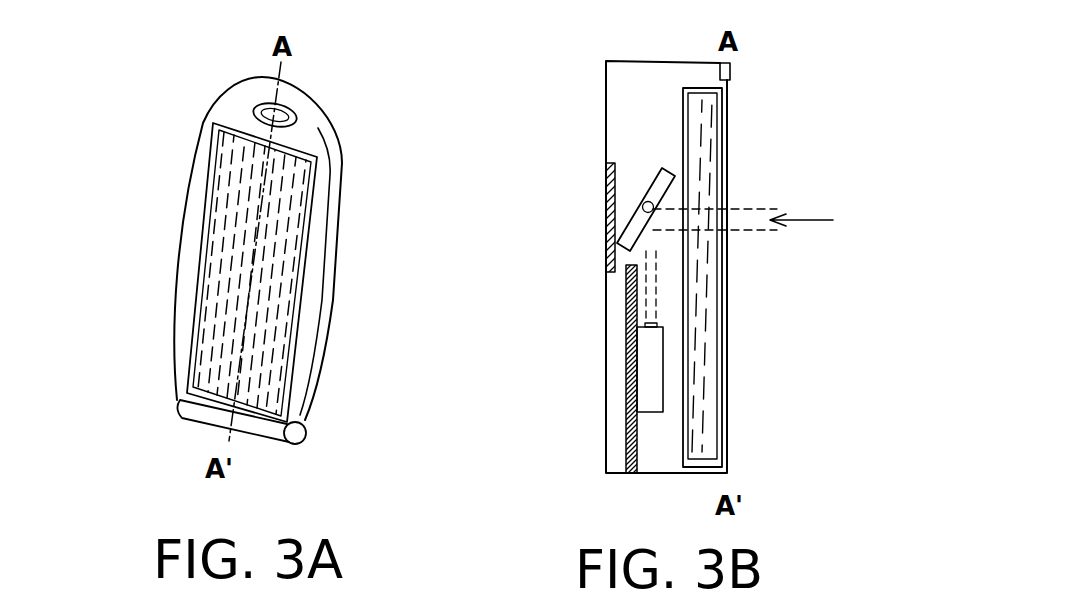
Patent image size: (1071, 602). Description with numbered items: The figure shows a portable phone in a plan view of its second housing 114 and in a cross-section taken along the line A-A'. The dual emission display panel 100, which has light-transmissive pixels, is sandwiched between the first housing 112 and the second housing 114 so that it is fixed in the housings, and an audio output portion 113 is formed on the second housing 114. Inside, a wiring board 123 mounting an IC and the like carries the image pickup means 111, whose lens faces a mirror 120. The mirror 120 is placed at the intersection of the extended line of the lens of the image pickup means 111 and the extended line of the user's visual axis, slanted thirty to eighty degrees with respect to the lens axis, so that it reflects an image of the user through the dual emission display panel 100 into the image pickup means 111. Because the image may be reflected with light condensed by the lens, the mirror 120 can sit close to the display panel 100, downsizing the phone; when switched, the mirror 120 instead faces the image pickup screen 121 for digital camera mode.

In FIG. 3A, the dual emission display panel 100 is at (285, 350).
In FIG. 3B, the dual emission display panel 100 is at (705, 337).
In FIG. 3B, the image pickup means 111 is at (643, 355).
In FIG. 3B, the first housing 112 is at (630, 77).
In FIG. 3A, the audio output portion 113 is at (291, 109).
In FIG. 3B, the audio output portion 113 is at (730, 72).
In FIG. 3A, the second housing 114 is at (183, 232).
In FIG. 3B, the mirror 120 is at (664, 171).
In FIG. 3B, the image pickup screen 121 is at (607, 232).
In FIG. 3B, the wiring board 123 is at (626, 452).